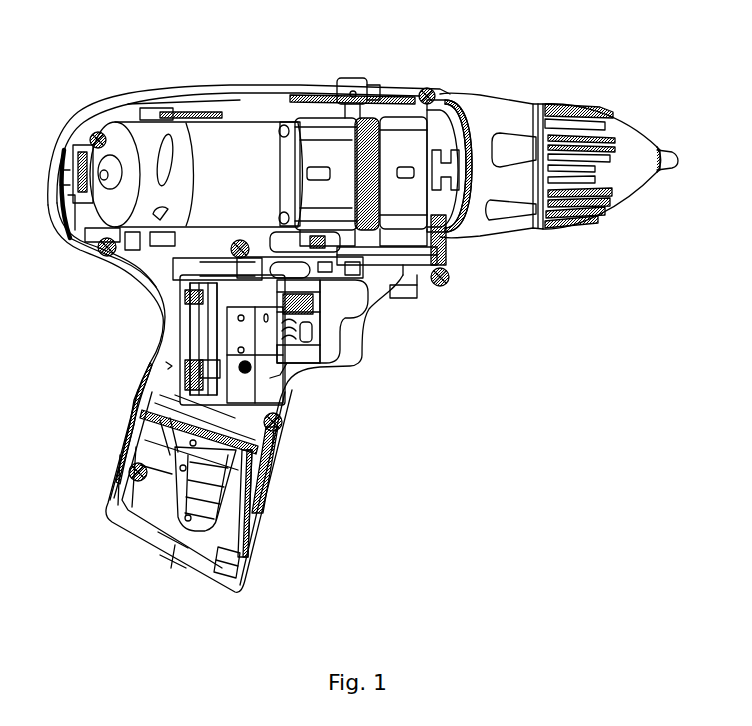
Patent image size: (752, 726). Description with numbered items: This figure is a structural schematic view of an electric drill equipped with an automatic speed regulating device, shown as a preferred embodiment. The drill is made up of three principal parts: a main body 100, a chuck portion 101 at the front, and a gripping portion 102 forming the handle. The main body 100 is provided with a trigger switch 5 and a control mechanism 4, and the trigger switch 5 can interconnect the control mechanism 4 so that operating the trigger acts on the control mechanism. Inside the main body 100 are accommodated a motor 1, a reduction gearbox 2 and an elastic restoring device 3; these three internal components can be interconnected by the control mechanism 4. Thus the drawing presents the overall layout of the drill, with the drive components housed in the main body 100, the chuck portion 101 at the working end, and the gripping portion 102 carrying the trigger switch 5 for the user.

The motor 1 is at (232, 150).
The reduction gearbox 2 is at (325, 148).
The elastic restoring device 3 is at (357, 80).
The control mechanism 4 is at (402, 260).
The trigger switch 5 is at (346, 335).
The main body 100 is at (130, 328).
The chuck portion 101 is at (543, 107).
The gripping portion 102 is at (264, 483).